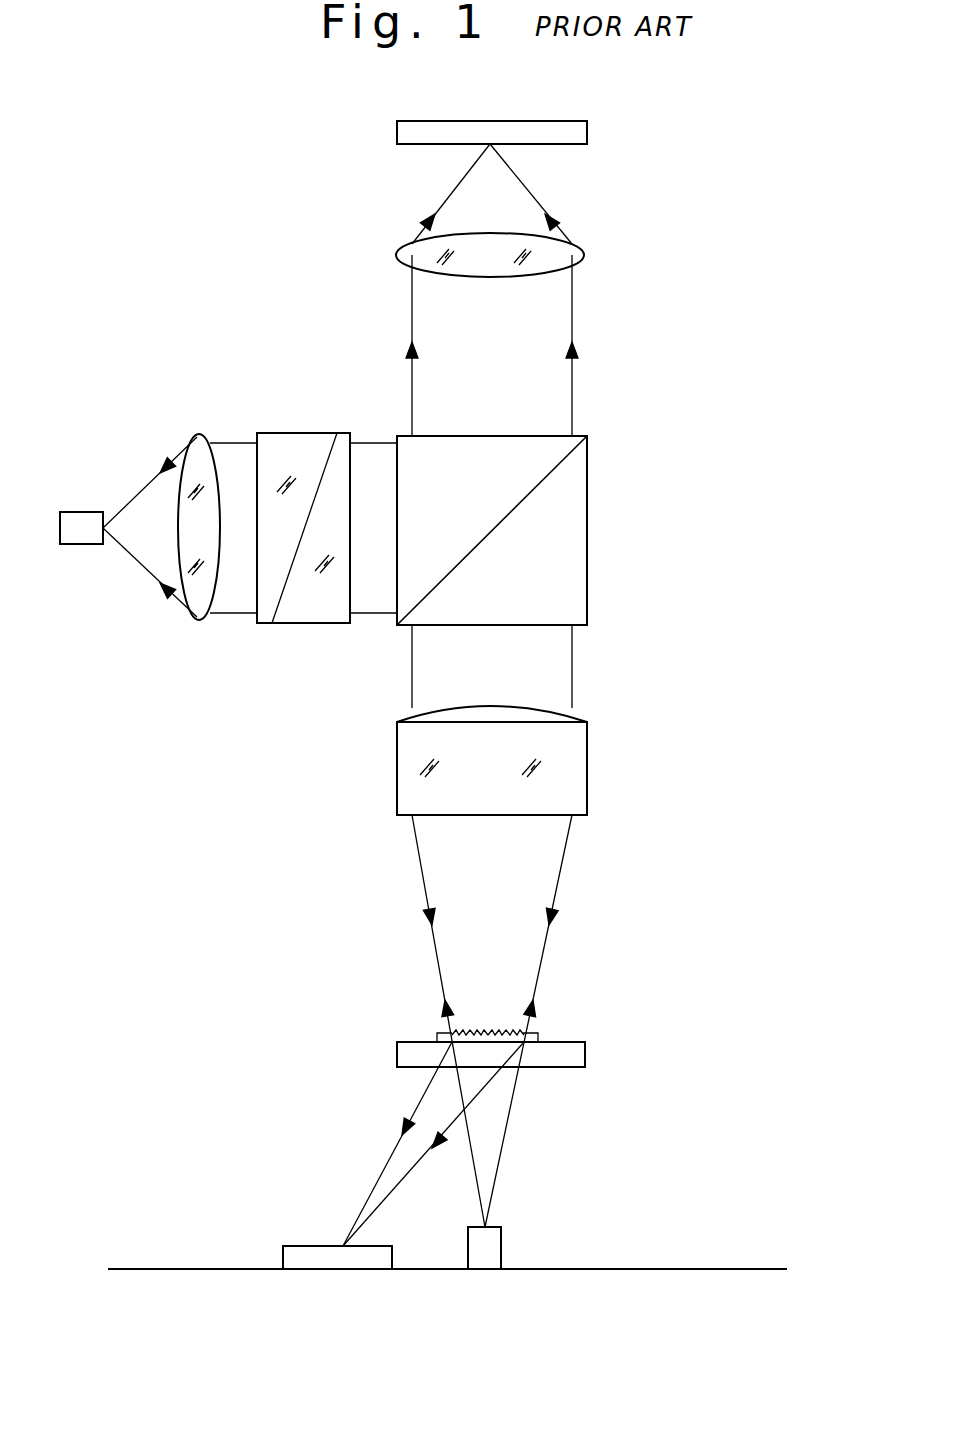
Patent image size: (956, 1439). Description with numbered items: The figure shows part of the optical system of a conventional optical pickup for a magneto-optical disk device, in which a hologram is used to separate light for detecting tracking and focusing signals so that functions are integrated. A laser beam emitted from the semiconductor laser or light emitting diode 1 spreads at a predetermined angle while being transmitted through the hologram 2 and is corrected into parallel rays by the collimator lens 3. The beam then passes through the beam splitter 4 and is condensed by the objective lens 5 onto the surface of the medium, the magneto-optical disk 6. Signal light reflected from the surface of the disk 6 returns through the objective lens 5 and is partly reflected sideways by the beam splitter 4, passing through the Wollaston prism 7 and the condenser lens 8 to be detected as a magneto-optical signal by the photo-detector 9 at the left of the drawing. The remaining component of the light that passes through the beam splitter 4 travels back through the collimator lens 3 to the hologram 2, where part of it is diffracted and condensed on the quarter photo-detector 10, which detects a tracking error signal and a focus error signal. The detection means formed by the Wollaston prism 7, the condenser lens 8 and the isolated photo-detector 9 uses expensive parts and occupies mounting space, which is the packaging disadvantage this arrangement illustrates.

The semiconductor laser or light emitting diode 1 is at (501, 1250).
The hologram 2 is at (568, 1042).
The collimator lens 3 is at (587, 762).
The beam splitter 4 is at (587, 527).
The objective lens 5 is at (584, 252).
The magneto-optical disk 6 is at (587, 133).
The Wollaston prism 7 is at (302, 433).
The condenser lens 8 is at (197, 437).
The photo-detector 9 is at (90, 545).
The photo-detector 10 is at (302, 1246).